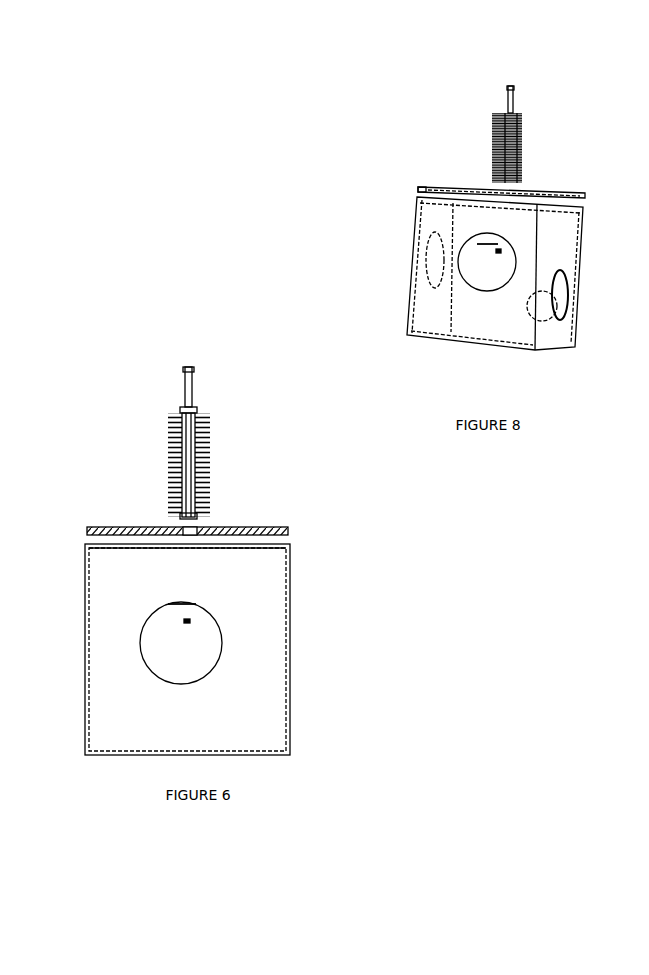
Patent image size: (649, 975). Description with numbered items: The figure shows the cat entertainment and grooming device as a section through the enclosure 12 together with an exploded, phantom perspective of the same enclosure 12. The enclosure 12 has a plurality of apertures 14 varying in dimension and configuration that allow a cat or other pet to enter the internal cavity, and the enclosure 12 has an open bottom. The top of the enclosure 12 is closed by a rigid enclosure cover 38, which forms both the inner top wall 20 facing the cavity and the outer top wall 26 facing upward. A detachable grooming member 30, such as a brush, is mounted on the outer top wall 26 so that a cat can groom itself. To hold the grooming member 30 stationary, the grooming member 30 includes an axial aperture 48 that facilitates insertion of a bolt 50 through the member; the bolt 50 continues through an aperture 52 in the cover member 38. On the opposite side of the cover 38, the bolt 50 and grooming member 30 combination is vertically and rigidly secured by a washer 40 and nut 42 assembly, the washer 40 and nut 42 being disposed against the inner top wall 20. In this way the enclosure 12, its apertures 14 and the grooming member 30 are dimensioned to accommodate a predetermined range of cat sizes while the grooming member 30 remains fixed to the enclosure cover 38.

In FIG. 6, the enclosure 12 is at (291, 708).
In FIG. 8, the enclosure 12 is at (478, 349).
In FIG. 6, the apertures 14 is at (203, 683).
In FIG. 8, the apertures 14 is at (518, 252).
In FIG. 6, the inner top wall 20 is at (283, 539).
In FIG. 6, the outer top wall 26 is at (257, 527).
In FIG. 8, the outer top wall 26 is at (447, 184).
In FIG. 6, the grooming member 30 is at (209, 433).
In FIG. 8, the grooming member 30 is at (491, 142).
In FIG. 6, the enclosure cover 38 is at (291, 532).
In FIG. 6, the washer 40 is at (166, 601).
In FIG. 8, the washer 40 is at (486, 243).
In FIG. 6, the nut 42 is at (181, 623).
In FIG. 8, the nut 42 is at (498, 256).
In FIG. 6, the axial aperture 48 is at (204, 534).
In FIG. 6, the bolt 50 is at (184, 390).
In FIG. 8, the bolt 50 is at (513, 95).
In FIG. 6, the aperture 52 is at (187, 519).